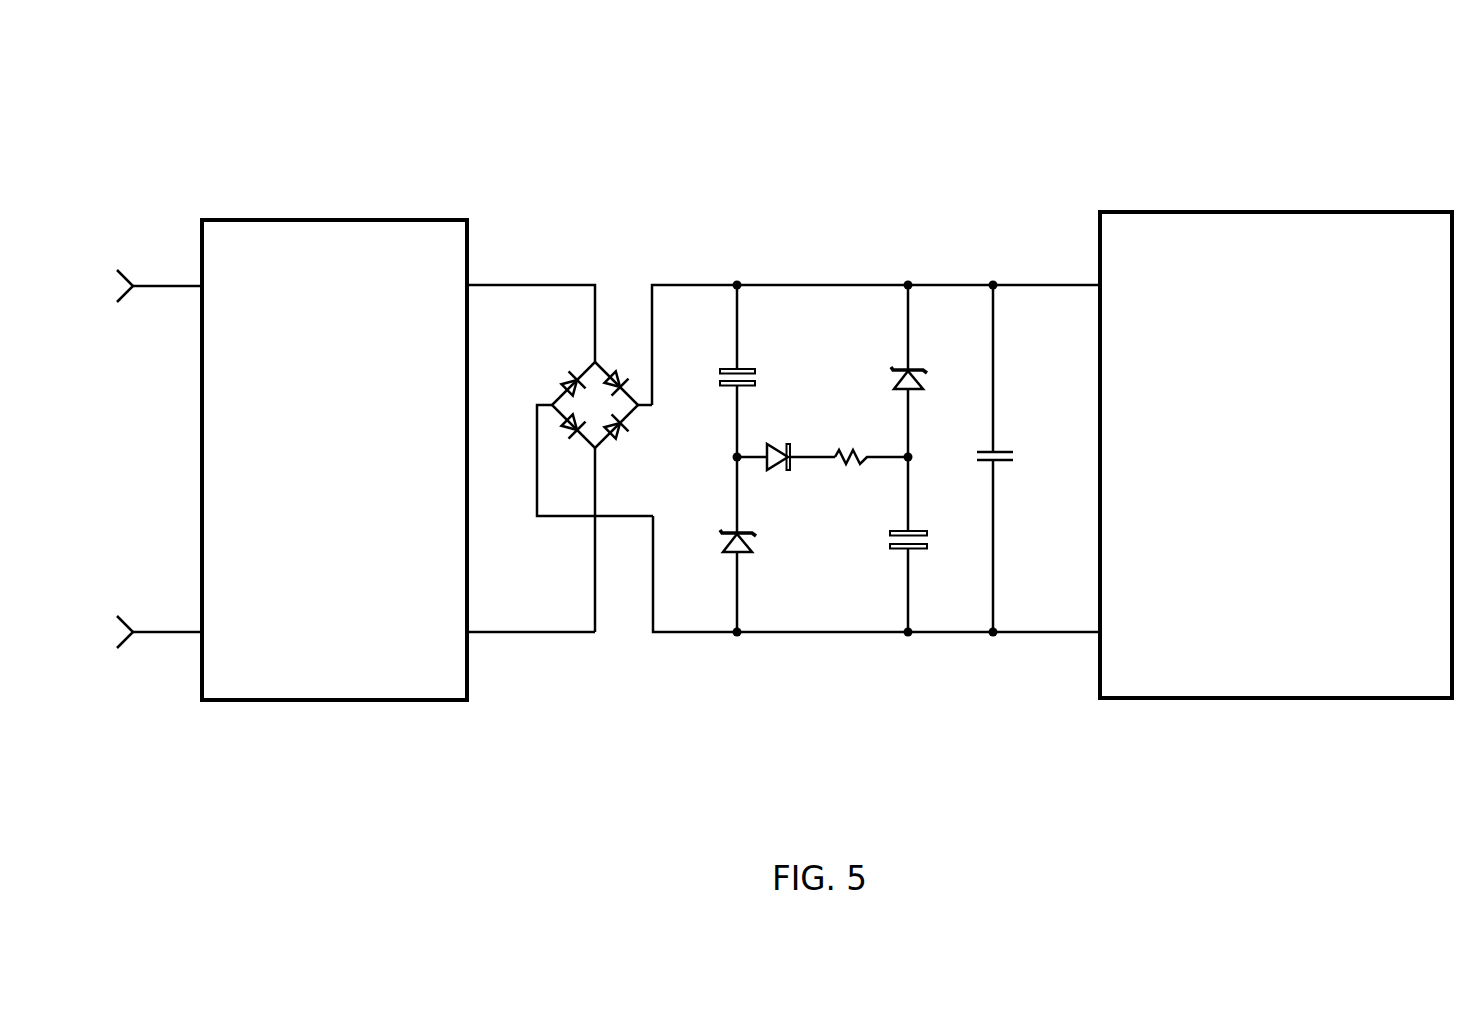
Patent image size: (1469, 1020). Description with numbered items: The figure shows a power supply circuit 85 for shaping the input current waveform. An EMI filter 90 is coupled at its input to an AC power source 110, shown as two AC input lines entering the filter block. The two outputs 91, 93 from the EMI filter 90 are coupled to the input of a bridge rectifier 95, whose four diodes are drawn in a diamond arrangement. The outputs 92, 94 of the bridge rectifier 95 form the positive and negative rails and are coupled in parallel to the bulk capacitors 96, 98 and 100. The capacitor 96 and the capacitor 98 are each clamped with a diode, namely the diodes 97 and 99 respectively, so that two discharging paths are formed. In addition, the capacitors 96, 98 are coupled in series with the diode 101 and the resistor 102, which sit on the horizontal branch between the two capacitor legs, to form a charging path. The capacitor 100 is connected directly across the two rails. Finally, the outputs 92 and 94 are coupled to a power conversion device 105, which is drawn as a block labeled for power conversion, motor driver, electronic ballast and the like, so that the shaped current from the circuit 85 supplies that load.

The circuit 85 is at (948, 63).
The EMI filter 90 is at (328, 220).
The output from the EMI filter 91 is at (520, 285).
The output of the bridge rectifier 92 is at (687, 285).
The output from the EMI filter 93 is at (520, 634).
The output of the bridge rectifier 94 is at (687, 634).
The bridge rectifier 95 is at (602, 443).
The capacitor 96 is at (752, 368).
The diode 97 is at (755, 532).
The capacitor 98 is at (928, 532).
The diode 99 is at (925, 368).
The capacitor 100 is at (1008, 452).
The diode 101 is at (790, 442).
The resistor 102 is at (848, 466).
The power conversion device 105 is at (1278, 212).
The AC power source 110 is at (182, 292).